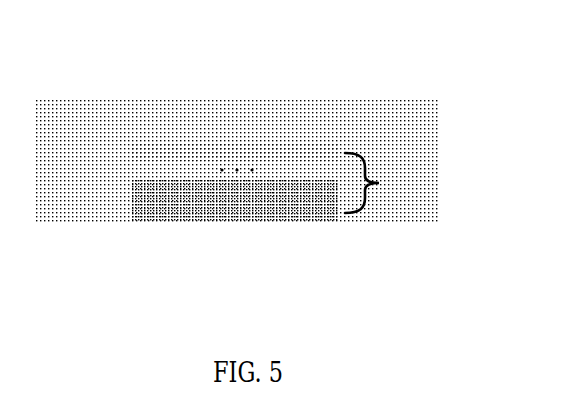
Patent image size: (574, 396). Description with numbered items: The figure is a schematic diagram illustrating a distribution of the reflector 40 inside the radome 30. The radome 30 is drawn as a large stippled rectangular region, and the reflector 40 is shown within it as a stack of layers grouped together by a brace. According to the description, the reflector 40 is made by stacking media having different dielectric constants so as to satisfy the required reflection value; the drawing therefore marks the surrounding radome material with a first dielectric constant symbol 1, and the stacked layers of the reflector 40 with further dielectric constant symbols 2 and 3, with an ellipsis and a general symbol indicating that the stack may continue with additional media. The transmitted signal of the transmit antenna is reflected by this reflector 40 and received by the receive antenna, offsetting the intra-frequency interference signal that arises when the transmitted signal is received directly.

The radome 30 is at (237, 128).
The reflector 40 is at (290, 225).
The dielectric constant region ε 1 is at (237, 161).
The dielectric layer ε 2 is at (234, 212).
The dielectric layer ε 3 is at (234, 189).